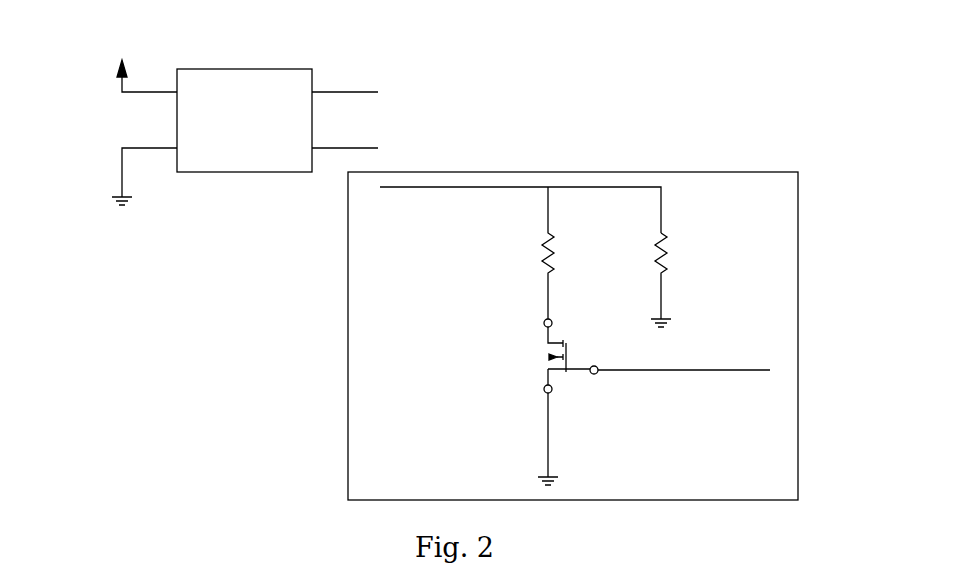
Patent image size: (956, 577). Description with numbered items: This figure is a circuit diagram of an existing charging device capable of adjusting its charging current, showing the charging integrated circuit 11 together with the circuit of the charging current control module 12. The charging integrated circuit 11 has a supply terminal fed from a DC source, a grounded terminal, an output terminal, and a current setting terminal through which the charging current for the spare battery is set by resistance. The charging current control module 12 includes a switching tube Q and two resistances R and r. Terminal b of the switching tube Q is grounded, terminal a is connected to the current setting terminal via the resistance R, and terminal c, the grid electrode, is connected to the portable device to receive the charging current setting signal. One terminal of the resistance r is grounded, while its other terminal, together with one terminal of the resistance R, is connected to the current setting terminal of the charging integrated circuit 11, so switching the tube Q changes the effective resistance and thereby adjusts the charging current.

The charging integrated circuit 11 is at (247, 69).
The charging current control module 12 is at (573, 320).
The resistance R is at (535, 253).
The resistance r is at (651, 280).
The switching tube Q is at (641, 398).